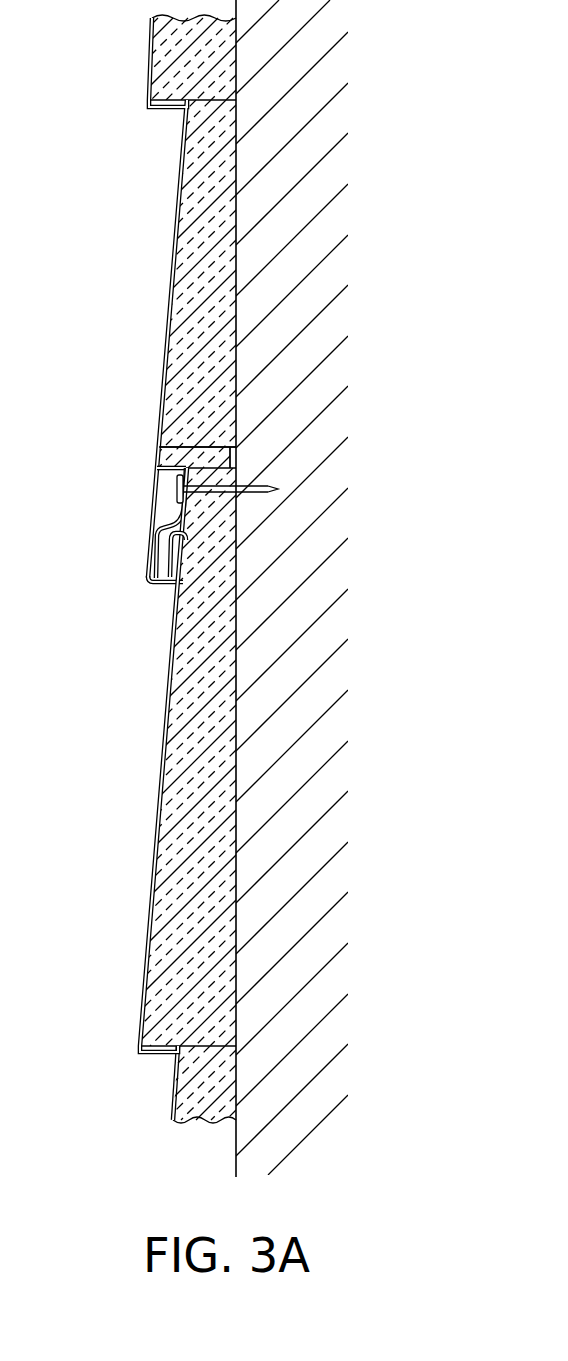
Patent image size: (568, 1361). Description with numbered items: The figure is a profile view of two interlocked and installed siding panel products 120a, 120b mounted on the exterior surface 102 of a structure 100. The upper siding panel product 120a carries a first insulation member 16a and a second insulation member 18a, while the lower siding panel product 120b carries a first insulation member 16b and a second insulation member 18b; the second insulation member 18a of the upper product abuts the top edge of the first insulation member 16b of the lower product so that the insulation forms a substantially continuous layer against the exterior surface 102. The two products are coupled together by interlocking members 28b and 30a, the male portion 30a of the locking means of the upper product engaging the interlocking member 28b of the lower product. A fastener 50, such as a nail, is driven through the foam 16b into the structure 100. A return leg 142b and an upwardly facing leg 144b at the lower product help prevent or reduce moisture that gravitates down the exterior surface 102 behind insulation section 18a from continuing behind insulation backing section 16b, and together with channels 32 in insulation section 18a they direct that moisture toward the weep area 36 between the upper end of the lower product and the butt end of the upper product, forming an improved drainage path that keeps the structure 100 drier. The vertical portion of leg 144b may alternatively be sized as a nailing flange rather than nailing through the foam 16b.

The upper siding panel 120a is at (146, 190).
The lower siding panel 120b is at (136, 800).
The first insulation member 16a is at (205, 62).
The first insulation member 16b is at (230, 660).
The second insulation member 18a is at (215, 373).
The second insulation member 18b is at (224, 1069).
The return leg 142b is at (181, 415).
The upwardly facing leg 144b is at (236, 462).
The channels 32 is at (171, 463).
The weep area 36 is at (167, 508).
The interlocking member 28b is at (160, 542).
The male portion of locking means 30a is at (147, 584).
The fastener 50 is at (272, 497).
The structure 100 is at (312, 961).
The exterior surface 102 is at (236, 1163).